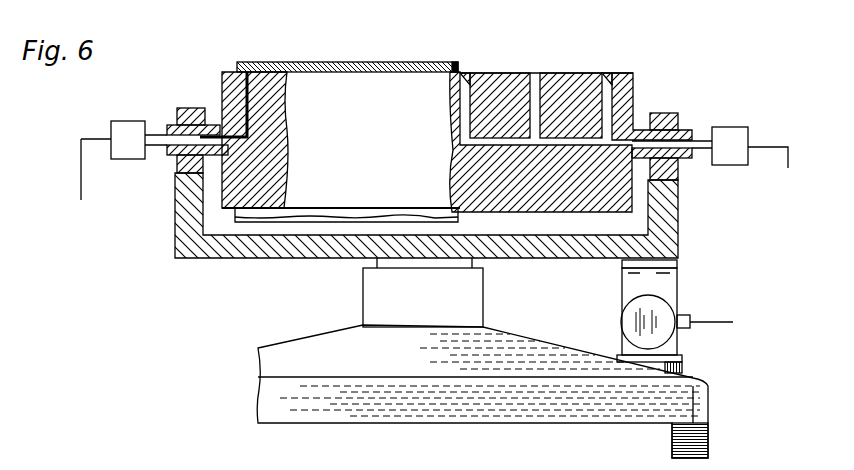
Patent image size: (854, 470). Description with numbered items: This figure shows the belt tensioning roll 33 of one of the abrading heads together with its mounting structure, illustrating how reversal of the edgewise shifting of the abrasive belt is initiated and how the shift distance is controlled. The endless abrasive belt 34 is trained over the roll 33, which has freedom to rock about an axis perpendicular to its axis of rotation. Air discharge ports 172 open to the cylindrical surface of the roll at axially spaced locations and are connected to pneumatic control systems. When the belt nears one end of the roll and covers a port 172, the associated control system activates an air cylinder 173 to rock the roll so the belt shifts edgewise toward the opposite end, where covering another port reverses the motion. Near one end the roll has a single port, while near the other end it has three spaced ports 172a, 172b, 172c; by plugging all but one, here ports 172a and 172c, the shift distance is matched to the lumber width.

The air discharge port 172 is at (245, 74).
The endless abrasive belt 34 is at (343, 44).
The belt tensioning roll 33 is at (518, 82).
The port 172a is at (465, 100).
The port 172b is at (533, 100).
The port 172c is at (607, 97).
The air cylinder 173 is at (655, 317).